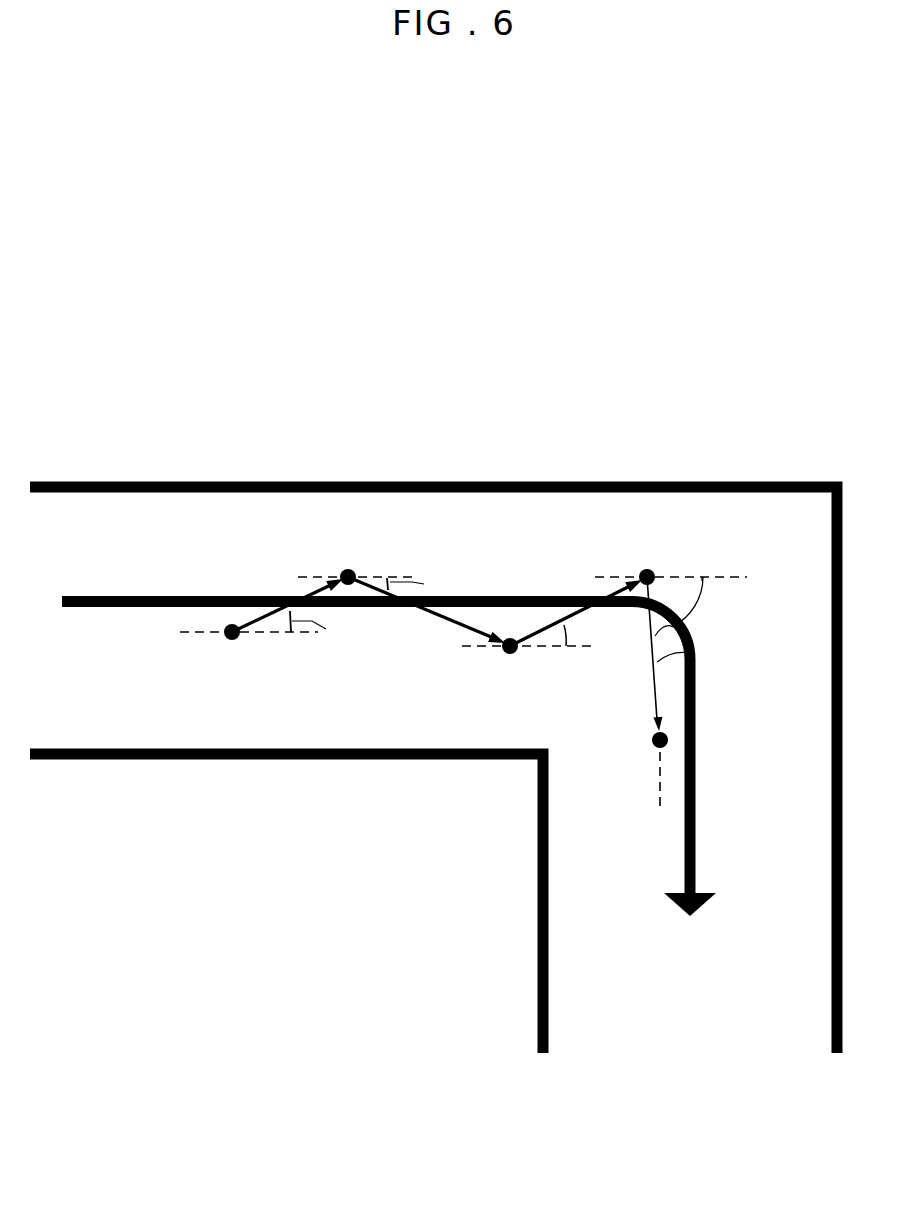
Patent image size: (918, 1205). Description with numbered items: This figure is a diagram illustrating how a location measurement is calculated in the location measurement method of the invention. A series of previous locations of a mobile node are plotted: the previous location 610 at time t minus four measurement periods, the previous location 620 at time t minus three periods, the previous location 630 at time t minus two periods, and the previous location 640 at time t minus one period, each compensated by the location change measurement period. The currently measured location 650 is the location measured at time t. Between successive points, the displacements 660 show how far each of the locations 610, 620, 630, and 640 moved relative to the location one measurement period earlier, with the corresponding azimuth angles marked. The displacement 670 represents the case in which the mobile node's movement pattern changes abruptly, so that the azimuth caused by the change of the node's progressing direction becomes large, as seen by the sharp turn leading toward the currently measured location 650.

The previous location at time t−4Δs 610 is at (232, 622).
The previous location at time t−3Δs 620 is at (348, 567).
The previous location at time t−2Δs 630 is at (508, 636).
The previous location at time t−Δs 640 is at (647, 567).
The currently measured location 650 is at (668, 738).
The displacements of the locations 660 is at (536, 650).
The displacement upon abrupt movement pattern change 670 is at (700, 652).